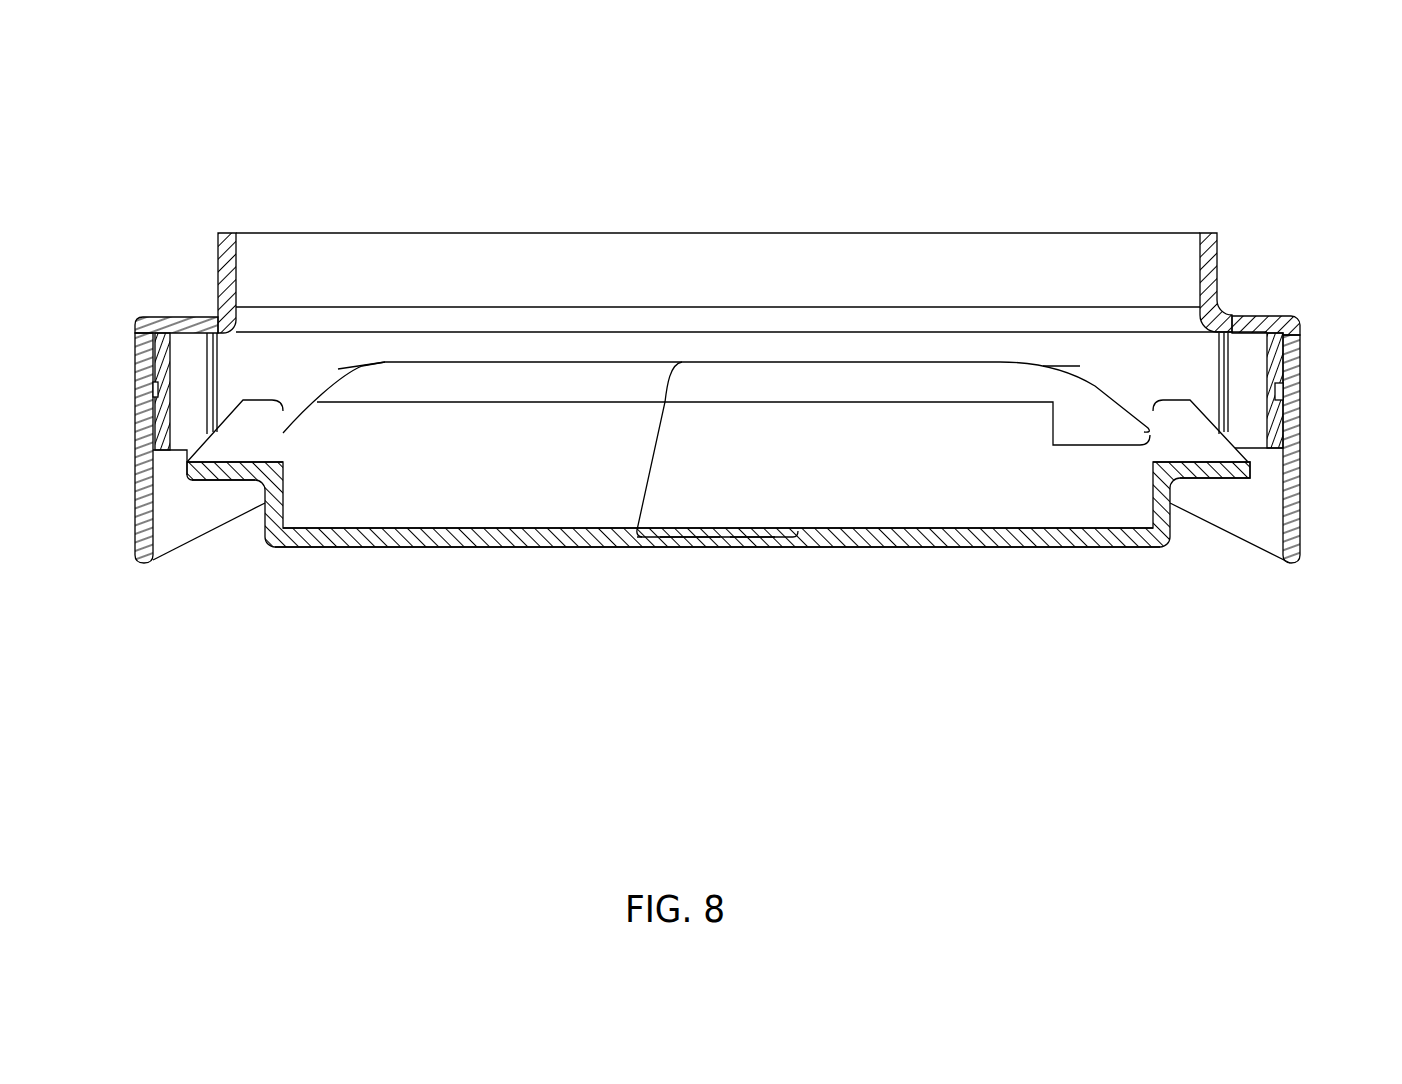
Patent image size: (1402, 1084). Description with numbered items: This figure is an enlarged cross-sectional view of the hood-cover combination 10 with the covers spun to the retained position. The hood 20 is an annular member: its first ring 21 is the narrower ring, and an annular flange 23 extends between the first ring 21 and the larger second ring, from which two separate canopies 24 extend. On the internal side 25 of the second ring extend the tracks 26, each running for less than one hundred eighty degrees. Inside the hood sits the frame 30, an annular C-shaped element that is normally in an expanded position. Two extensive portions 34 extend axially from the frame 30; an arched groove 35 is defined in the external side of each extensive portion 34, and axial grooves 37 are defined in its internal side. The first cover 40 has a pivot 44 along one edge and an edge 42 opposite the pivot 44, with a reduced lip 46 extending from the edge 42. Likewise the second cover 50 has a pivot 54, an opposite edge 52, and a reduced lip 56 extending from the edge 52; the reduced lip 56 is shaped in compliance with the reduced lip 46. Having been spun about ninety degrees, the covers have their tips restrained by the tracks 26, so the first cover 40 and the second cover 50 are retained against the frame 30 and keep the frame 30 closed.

The hood-cover combination 10 is at (253, 158).
The hood 20 is at (742, 229).
The first ring 21 is at (1218, 262).
The annular flange 23 is at (1247, 326).
The canopies 24 is at (1292, 545).
The internal side 25 is at (1283, 500).
The tracks 26 is at (1278, 389).
The frame 30 is at (1010, 352).
The extensive portions 34 is at (152, 435).
The arched groove 35 is at (152, 386).
The axial grooves 37 is at (228, 358).
The first cover 40 is at (433, 548).
The edge 42 is at (639, 537).
The pivot 44 is at (222, 472).
The reduced lip 46 is at (754, 538).
The second cover 50 is at (991, 538).
The edge 52 is at (795, 537).
The pivot 54 is at (1203, 452).
The reduced lip 56 is at (695, 538).